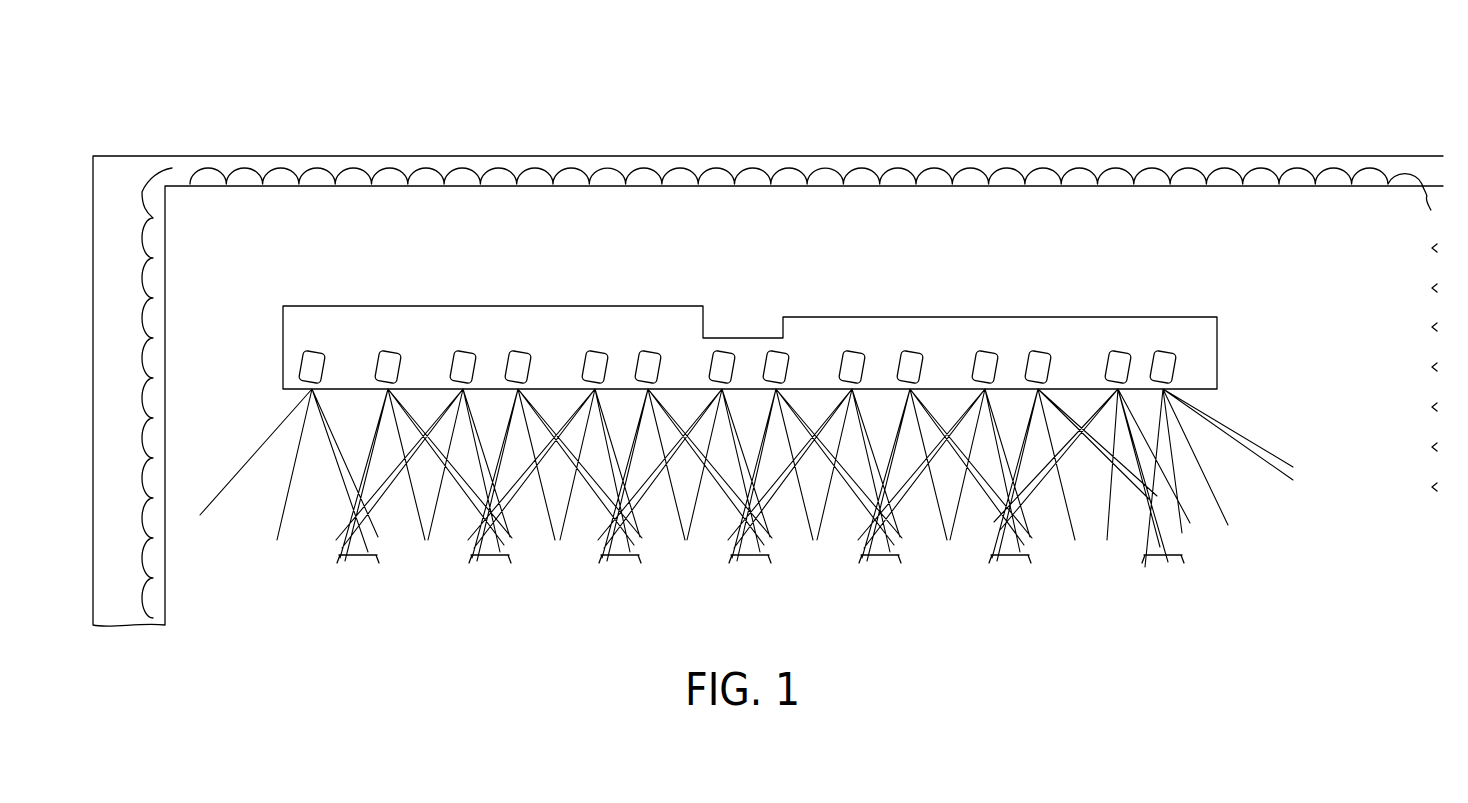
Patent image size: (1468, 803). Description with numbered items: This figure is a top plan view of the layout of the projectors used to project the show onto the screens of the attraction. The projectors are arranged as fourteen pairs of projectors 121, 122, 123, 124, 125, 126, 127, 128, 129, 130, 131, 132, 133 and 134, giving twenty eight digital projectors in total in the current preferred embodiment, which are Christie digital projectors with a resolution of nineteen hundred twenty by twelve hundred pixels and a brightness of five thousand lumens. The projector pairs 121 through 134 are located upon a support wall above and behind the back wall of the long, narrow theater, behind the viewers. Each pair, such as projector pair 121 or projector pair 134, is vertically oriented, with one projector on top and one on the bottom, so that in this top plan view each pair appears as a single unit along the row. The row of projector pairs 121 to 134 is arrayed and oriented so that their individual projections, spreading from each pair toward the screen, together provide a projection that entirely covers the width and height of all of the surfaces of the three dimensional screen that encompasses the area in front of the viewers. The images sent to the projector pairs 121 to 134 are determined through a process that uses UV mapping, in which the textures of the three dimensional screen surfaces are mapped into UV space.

The projector pair 121 is at (316, 352).
The projector pair 122 is at (392, 352).
The projector pair 123 is at (467, 352).
The projector pair 124 is at (522, 352).
The projector pair 125 is at (599, 352).
The projector pair 126 is at (652, 352).
The projector pair 127 is at (726, 352).
The projector pair 128 is at (780, 352).
The projector pair 129 is at (856, 352).
The projector pair 130 is at (914, 352).
The projector pair 131 is at (989, 352).
The projector pair 132 is at (1042, 352).
The projector pair 133 is at (1122, 352).
The projector pair 134 is at (1167, 352).